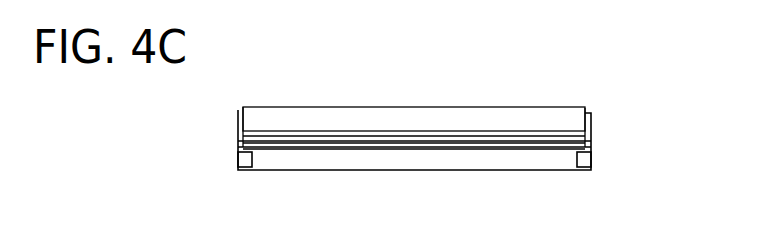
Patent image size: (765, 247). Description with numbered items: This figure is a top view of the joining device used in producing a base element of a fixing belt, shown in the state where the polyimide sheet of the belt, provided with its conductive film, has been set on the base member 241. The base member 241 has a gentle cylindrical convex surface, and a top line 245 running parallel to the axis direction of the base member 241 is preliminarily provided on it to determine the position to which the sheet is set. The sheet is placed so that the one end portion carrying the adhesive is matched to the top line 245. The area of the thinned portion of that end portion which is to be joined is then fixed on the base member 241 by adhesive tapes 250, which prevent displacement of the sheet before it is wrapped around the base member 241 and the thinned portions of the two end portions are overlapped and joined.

The base member 241 is at (591, 113).
The top line 245 is at (591, 143).
The adhesive tapes 250 is at (238, 158).